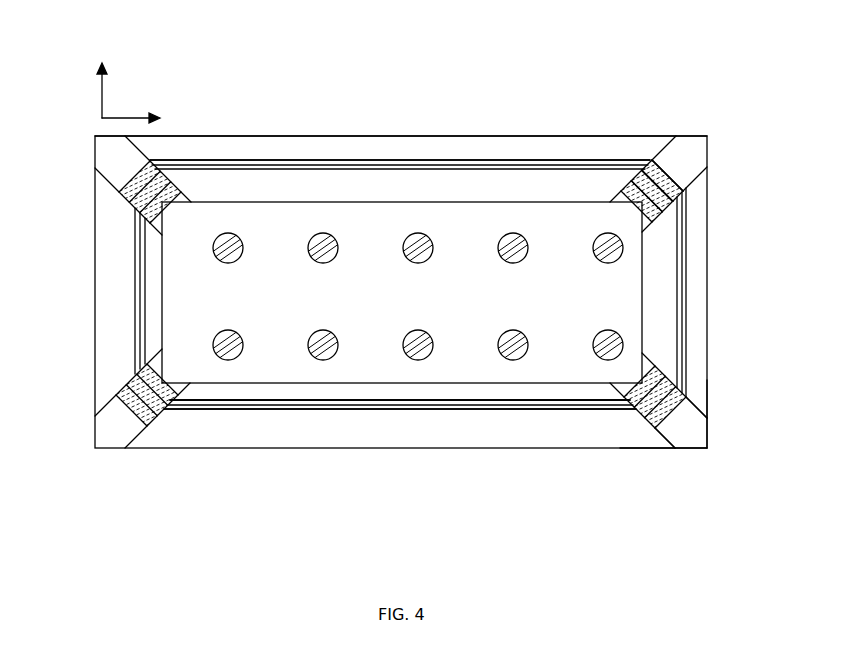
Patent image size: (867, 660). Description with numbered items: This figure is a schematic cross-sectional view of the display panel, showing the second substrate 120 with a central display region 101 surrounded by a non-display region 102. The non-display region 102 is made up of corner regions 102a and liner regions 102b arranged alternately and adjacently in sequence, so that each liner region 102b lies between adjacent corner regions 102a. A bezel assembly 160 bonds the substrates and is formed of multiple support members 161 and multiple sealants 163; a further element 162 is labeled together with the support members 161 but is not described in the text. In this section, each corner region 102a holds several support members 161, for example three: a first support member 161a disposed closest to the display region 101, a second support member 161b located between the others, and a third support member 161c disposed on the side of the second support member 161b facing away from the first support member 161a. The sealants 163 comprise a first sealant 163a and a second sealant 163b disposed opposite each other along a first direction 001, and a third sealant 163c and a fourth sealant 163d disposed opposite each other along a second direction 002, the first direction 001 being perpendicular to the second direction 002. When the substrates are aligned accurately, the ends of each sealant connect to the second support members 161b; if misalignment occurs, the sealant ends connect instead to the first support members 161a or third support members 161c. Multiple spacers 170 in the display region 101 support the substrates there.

The first direction 001 is at (150, 119).
The second direction 002 is at (102, 80).
The display region 101 is at (388, 372).
The non-display region 102 is at (700, 527).
The corner region 102a is at (693, 443).
The liner region 102b is at (592, 443).
The second substrate 120 is at (404, 135).
The bezel assembly 160 is at (303, 508).
The support member 161 is at (148, 449).
The adhesive member 162 is at (401, 319).
The first support member 161a is at (627, 172).
The second support member 161b is at (650, 176).
The third support member 161c is at (675, 188).
The sealant 163 is at (305, 410).
The first sealant 163a is at (135, 288).
The second sealant 163b is at (686, 285).
The third sealant 163c is at (443, 410).
The fourth sealant 163d is at (462, 160).
The spacer 170 is at (323, 233).